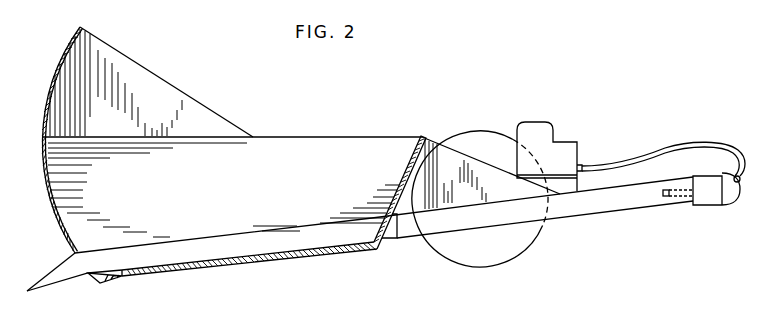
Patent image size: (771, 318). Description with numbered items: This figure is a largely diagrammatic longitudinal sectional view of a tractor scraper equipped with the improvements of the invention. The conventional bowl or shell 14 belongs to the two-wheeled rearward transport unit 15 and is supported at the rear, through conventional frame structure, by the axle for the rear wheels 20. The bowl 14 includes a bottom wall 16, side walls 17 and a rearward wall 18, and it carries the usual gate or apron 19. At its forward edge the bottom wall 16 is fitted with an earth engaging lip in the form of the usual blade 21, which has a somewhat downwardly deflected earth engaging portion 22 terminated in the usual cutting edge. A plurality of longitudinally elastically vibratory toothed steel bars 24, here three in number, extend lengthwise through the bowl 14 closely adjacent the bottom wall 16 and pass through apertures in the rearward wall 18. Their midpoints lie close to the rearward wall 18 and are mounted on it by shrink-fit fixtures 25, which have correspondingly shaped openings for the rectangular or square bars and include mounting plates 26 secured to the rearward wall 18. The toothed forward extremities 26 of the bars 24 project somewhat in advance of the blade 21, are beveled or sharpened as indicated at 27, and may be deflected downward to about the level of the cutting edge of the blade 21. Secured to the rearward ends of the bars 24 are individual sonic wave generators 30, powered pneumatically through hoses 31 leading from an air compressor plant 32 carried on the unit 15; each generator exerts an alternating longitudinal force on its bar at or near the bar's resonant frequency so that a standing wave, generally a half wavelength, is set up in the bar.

The bowl 14 is at (306, 133).
The rearward transport unit 15 is at (424, 137).
The bottom wall 16 is at (232, 266).
The side walls 17 is at (265, 147).
The rearward wall 18 is at (410, 152).
The gate or apron 19 is at (61, 57).
The rear wheels 20 is at (496, 131).
The blade 21 is at (128, 262).
The earth engaging portion 22 is at (113, 281).
The vibratory toothed steel bars 24 is at (295, 225).
The fixtures 25 is at (392, 242).
The toothed forward extremities 26 is at (48, 284).
The beveled or sharpened portion 27 is at (58, 265).
The sonic wave generators 30 is at (699, 207).
The hoses 31 is at (671, 148).
The air compressor plant 32 is at (561, 132).